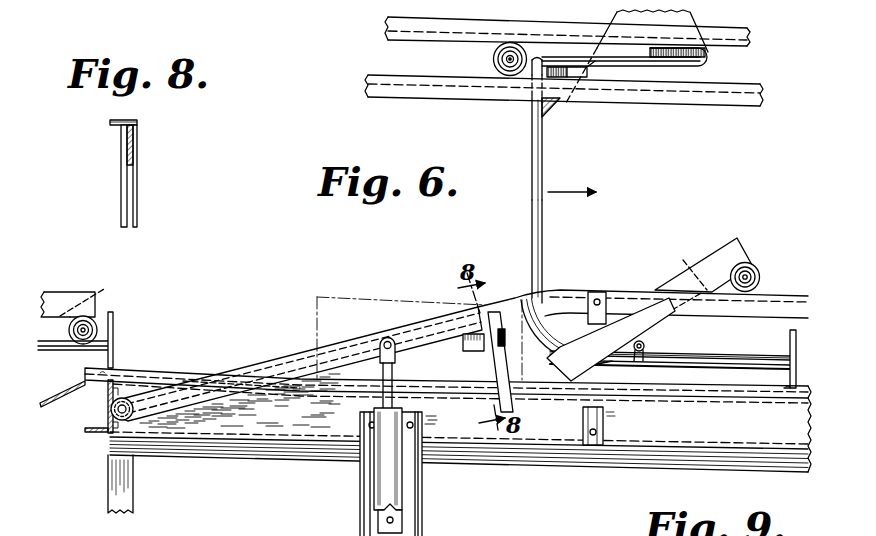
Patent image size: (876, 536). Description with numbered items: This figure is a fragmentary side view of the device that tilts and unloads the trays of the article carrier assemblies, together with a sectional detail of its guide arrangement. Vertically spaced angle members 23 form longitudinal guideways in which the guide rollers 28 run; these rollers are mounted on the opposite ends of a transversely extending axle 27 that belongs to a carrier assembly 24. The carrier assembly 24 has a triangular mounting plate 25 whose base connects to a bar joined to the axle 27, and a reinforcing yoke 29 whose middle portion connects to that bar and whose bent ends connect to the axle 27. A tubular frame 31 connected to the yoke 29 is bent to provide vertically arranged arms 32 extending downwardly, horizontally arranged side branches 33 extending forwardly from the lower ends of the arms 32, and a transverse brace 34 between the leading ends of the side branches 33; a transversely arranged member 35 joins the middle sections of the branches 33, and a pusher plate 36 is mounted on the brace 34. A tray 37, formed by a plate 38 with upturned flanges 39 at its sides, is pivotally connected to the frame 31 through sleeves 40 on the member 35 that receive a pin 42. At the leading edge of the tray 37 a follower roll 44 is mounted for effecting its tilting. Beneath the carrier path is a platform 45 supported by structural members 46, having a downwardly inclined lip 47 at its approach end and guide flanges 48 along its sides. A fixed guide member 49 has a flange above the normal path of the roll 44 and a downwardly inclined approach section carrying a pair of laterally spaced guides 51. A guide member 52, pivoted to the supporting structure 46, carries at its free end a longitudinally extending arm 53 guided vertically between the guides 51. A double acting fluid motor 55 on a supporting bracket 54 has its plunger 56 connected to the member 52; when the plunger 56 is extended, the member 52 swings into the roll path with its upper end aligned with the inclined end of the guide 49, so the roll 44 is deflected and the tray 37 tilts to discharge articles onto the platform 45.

In FIG. 6, the angle members 23 is at (750, 31).
In FIG. 6, the carrier assembly 24 is at (546, 241).
In FIG. 6, the triangular mounting plate 25 is at (708, 56).
In FIG. 6, the transversely extending axle 27 is at (509, 64).
In FIG. 6, the guide rollers 28 is at (494, 55).
In FIG. 6, the reinforcing yoke 29 is at (656, 66).
In FIG. 6, the tubular frame 31 is at (697, 354).
In FIG. 6, the vertically arranged arms 32 is at (545, 163).
In FIG. 6, the side branches 33 is at (47, 351).
In FIG. 6, the transverse brace 34 is at (92, 348).
In FIG. 6, the transversely arranged member 35 is at (654, 365).
In FIG. 6, the pusher plate 36 is at (114, 316).
In FIG. 6, the tray 37 is at (72, 292).
In FIG. 6, the plate 38 is at (706, 290).
In FIG. 6, the upturned flanges 39 is at (46, 292).
In FIG. 6, the sleeves 40 is at (644, 347).
In FIG. 6, the pin 42 is at (634, 355).
In FIG. 6, the follower roll 44 is at (114, 330).
In FIG. 6, the platform 45 is at (183, 381).
In FIG. 6, the structural members 46 is at (128, 498).
In FIG. 6, the downwardly inclined lip 47 is at (52, 404).
In FIG. 6, the guide flanges 48 is at (158, 369).
In FIG. 8, the guide member 49 is at (118, 125).
In FIG. 6, the guide member 49 is at (572, 291).
In FIG. 8, the guides 51 is at (134, 203).
In FIG. 6, the guides 51 is at (492, 361).
In FIG. 6, the guide member 52 is at (291, 362).
In FIG. 8, the longitudinally extending arm 53 is at (134, 157).
In FIG. 6, the longitudinally extending arm 53 is at (463, 351).
In FIG. 6, the supporting bracket 54 is at (362, 485).
In FIG. 6, the double acting fluid motor 55 is at (402, 484).
In FIG. 6, the plunger 56 is at (384, 392).